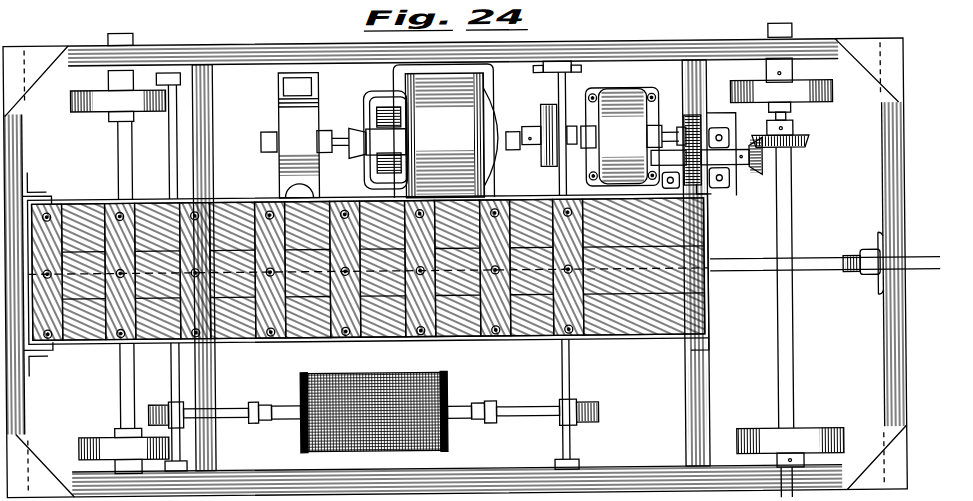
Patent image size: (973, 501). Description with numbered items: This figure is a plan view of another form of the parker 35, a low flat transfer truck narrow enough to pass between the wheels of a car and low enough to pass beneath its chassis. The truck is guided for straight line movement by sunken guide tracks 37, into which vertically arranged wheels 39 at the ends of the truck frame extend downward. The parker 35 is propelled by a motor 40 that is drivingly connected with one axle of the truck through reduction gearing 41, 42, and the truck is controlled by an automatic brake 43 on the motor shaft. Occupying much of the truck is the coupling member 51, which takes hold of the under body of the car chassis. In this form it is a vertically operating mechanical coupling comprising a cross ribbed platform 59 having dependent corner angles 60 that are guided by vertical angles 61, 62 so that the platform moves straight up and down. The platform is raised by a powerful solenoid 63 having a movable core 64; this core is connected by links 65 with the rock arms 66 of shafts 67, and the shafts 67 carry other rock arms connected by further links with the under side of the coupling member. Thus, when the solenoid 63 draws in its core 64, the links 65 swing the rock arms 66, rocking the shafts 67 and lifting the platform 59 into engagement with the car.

The parker 35 is at (307, 52).
The sunken guide track 37 is at (922, 259).
The vertically arranged wheel 39 is at (850, 271).
The motor 40 is at (434, 131).
The reduction gearing 41 is at (683, 128).
The reduction gearing 42 is at (797, 150).
The automatic brake 43 is at (290, 122).
The coupling member 51 is at (695, 285).
The cross ribbed platform 59 is at (407, 340).
The dependent corner angle 60 is at (53, 197).
The vertical angle 61 is at (37, 187).
The vertical angle 62 is at (705, 199).
The solenoid 63 is at (422, 393).
The movable core 64 is at (287, 411).
The link 65 is at (228, 416).
The rock arm 66 is at (163, 401).
The shaft 67 is at (172, 163).